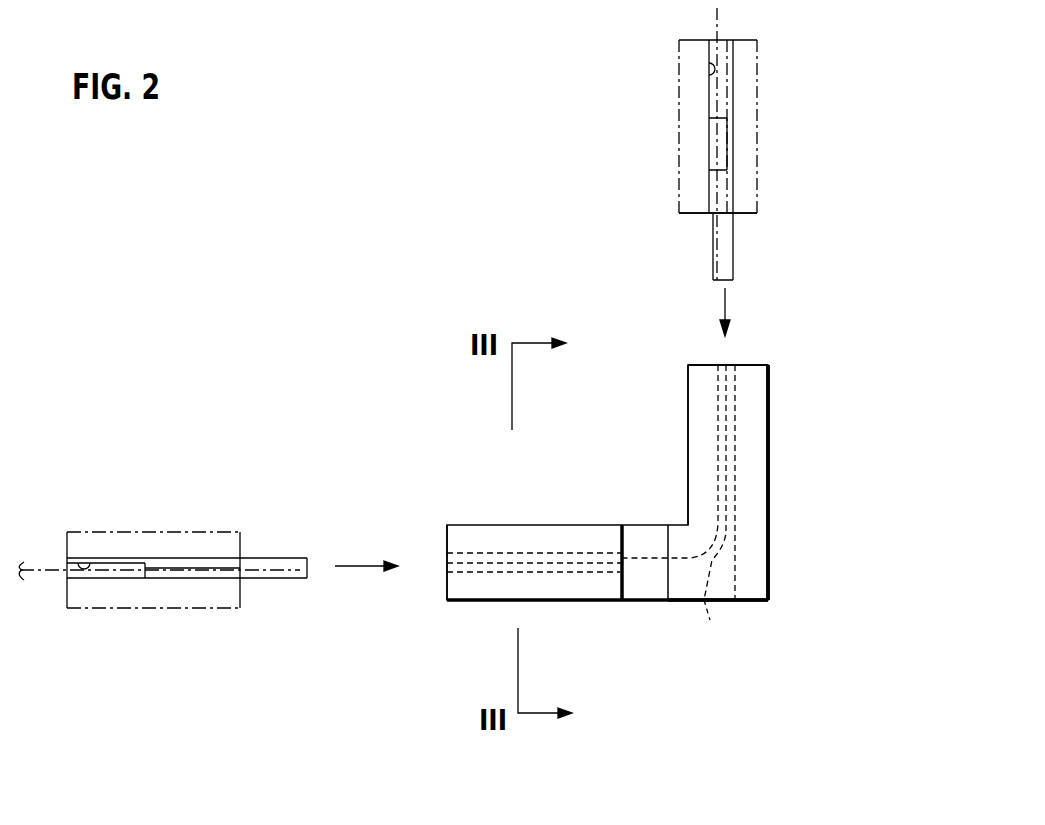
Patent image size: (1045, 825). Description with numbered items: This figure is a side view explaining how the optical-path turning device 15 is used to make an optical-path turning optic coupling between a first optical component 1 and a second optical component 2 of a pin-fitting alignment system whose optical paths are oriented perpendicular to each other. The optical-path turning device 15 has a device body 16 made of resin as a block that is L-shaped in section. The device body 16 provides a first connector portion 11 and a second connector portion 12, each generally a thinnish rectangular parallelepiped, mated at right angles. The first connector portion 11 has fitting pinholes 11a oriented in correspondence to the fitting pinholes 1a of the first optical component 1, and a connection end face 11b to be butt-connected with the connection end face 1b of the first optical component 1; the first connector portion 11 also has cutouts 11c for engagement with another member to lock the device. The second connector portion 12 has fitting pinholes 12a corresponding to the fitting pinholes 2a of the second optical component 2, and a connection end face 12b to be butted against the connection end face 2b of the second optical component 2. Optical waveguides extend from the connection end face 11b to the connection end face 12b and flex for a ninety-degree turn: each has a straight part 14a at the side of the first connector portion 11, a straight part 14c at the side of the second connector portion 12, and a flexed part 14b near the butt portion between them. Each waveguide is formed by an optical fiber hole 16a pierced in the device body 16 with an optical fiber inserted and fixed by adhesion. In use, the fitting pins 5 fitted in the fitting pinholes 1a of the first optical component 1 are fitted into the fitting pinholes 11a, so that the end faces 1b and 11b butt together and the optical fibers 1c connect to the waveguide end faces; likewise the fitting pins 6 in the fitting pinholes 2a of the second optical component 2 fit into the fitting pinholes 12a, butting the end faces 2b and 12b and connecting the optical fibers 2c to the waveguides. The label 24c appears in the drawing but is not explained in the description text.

The first optical component 1 is at (133, 530).
The fitting pinholes 1a is at (88, 557).
The connection end face 1b is at (242, 538).
The optical fibers 1c is at (190, 558).
The fitting pins 5 is at (284, 580).
The second optical component 2 is at (682, 132).
The fitting pinholes 2a is at (708, 72).
The connection end face 2b is at (691, 215).
The optical fibers 2c is at (720, 170).
The fitting pins 6 is at (734, 253).
The first connector portion 11 is at (485, 525).
The fitting pinholes 11a is at (558, 562).
The connection end face 11b is at (446, 535).
The cutouts 11c is at (637, 603).
The second connector portion 12 is at (697, 402).
The fitting pinholes 12a is at (722, 453).
The connection end face 12b is at (691, 364).
The straight part 14a is at (475, 566).
The flexed part 14b is at (714, 632).
The straight part 14c is at (736, 425).
The optical-path turning device 15 is at (678, 602).
The device body 16 is at (748, 602).
The optical fiber hole 16a is at (573, 565).
The bent guide groove 24c is at (720, 496).